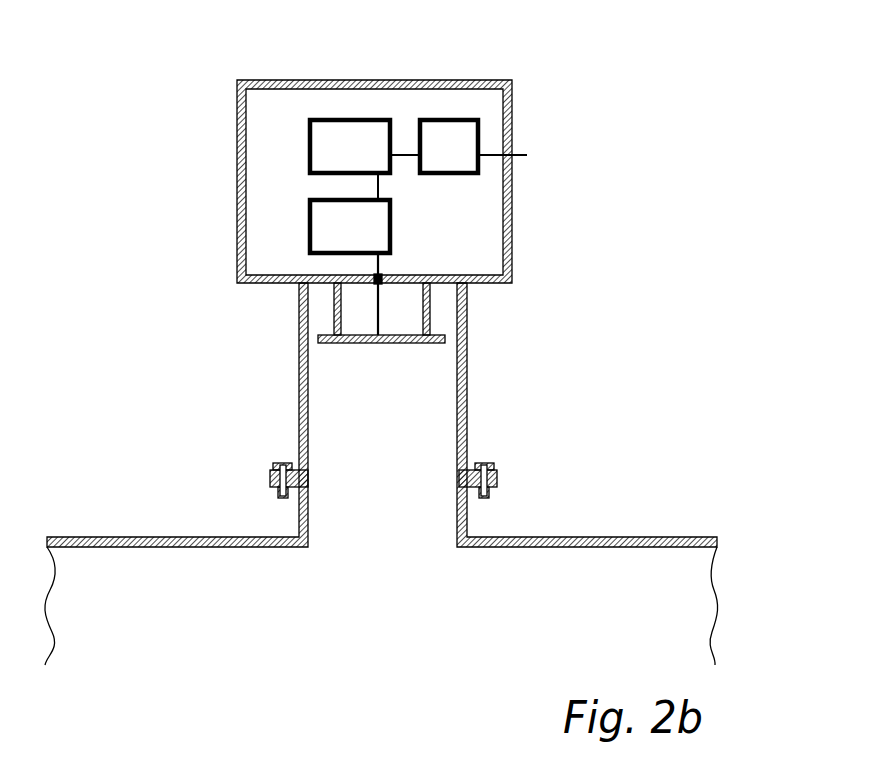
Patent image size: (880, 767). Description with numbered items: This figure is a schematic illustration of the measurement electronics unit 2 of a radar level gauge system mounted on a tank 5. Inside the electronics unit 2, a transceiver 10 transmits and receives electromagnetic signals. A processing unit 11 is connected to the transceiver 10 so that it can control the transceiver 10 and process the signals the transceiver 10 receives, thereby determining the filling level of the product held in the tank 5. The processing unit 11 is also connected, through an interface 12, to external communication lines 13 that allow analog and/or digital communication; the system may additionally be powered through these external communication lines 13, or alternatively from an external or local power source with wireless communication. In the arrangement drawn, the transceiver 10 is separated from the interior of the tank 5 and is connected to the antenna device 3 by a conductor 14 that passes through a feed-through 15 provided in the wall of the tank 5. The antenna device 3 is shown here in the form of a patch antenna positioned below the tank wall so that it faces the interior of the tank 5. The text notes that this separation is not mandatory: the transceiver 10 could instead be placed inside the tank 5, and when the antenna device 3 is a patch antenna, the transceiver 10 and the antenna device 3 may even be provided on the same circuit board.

The electronics unit 2 is at (293, 79).
The antenna device 3 is at (318, 338).
The tank 5 is at (605, 537).
The transceiver 10 is at (393, 223).
The processing unit 11 is at (308, 150).
The interface 12 is at (450, 118).
The external communication lines 13 is at (518, 160).
The conductor 14 is at (380, 310).
The feed-through 15 is at (386, 272).